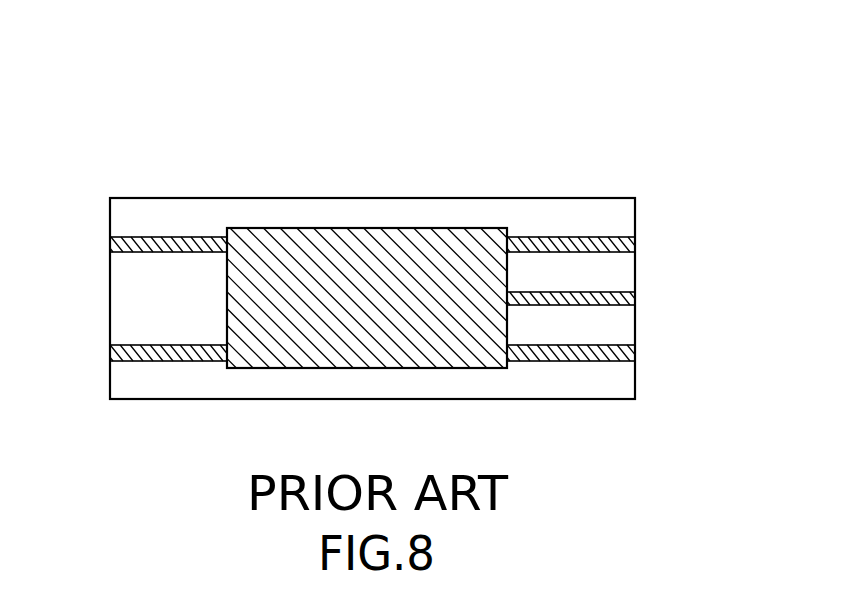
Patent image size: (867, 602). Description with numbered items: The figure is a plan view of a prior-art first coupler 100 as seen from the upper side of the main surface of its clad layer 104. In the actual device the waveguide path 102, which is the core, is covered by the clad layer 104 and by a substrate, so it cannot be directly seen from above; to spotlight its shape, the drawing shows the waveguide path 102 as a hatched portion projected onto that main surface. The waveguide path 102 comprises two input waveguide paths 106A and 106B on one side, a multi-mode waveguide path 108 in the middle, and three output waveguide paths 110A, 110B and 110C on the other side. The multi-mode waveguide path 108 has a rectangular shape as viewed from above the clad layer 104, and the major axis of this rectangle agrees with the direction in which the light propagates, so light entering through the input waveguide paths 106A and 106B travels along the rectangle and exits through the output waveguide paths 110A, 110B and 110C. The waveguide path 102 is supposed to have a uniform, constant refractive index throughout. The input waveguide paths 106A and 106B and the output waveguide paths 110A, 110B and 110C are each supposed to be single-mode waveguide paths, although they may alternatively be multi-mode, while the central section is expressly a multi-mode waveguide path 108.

The first coupler 100 is at (658, 73).
The waveguide path 102 is at (638, 123).
The clad layer 104 is at (155, 385).
The input waveguide path 106A is at (130, 240).
The input waveguide path 106B is at (158, 353).
The multi-mode waveguide path 108 is at (377, 268).
The output waveguide path 110A is at (532, 240).
The output waveguide path 110B is at (568, 290).
The output waveguide path 110C is at (613, 345).